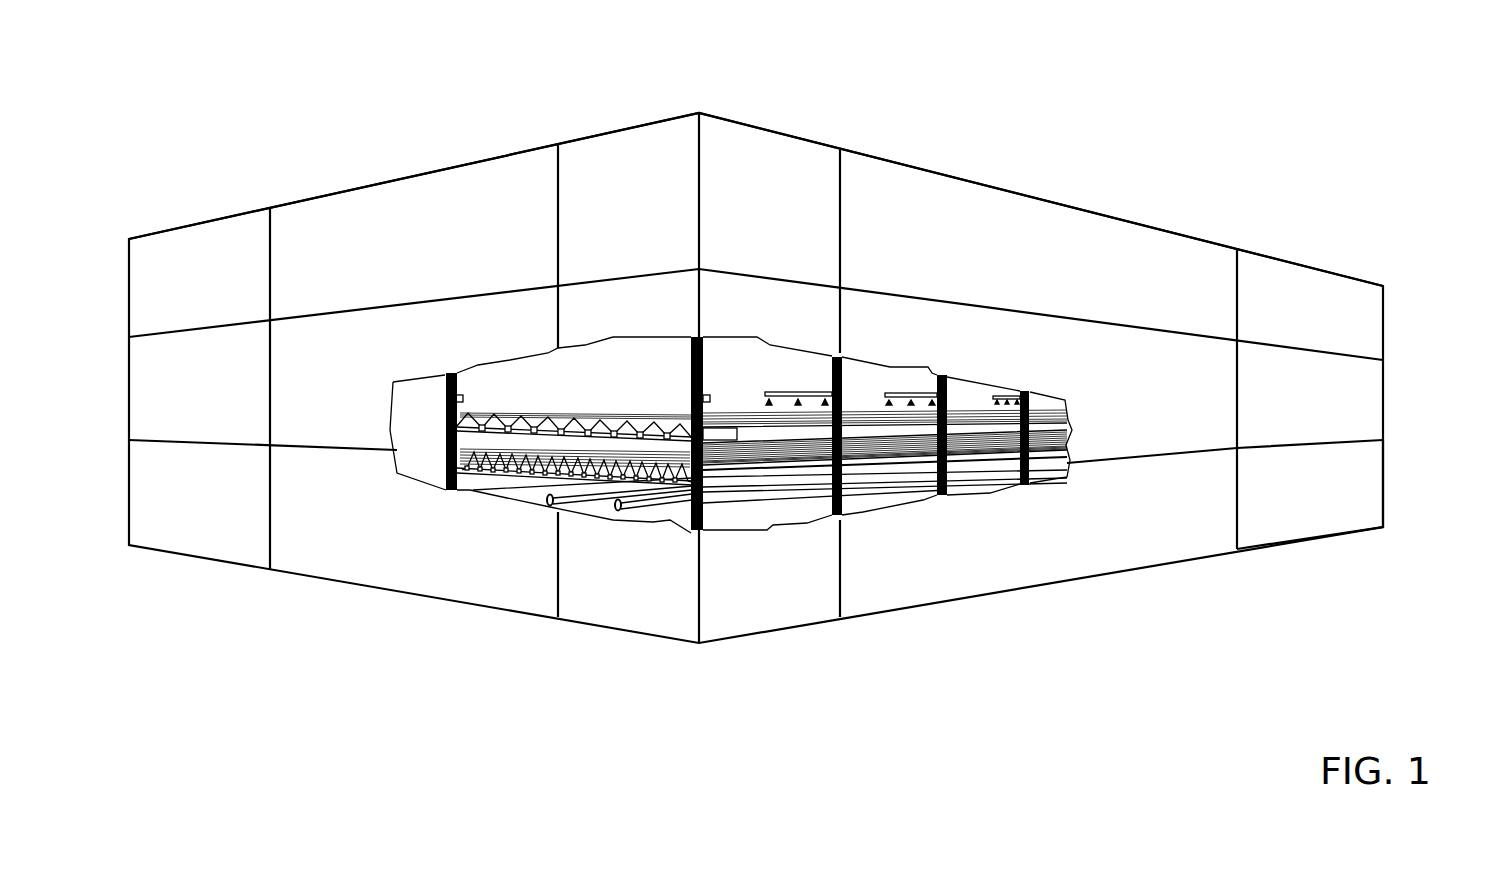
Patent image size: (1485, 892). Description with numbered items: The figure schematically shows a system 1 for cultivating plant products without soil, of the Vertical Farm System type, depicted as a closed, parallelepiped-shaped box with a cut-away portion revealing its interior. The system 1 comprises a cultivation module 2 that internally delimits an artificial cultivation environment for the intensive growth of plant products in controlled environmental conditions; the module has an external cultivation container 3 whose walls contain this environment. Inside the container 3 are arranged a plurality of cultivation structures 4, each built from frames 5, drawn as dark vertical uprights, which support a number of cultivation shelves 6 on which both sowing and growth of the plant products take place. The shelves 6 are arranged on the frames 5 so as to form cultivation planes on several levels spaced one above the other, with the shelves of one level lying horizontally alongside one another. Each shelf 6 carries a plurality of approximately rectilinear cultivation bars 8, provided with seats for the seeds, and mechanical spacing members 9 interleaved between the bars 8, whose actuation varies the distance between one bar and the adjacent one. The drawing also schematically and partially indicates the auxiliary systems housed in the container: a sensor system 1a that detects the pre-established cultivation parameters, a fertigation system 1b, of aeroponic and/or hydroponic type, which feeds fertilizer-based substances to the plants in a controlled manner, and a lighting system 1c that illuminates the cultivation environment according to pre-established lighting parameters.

The system for cultivating plant products without soil 1 is at (248, 642).
The sensor system 1a is at (465, 398).
The fertigation system 1b is at (588, 504).
The lighting system 1c is at (813, 392).
The cultivation module 2 is at (1393, 327).
The external cultivation container 3 is at (1363, 502).
The cultivation structure 4 is at (428, 472).
The frame 5 is at (450, 492).
The cultivation shelf 6 is at (740, 402).
The cultivation bar 8 is at (503, 472).
The mechanical spacing member 9 is at (561, 414).